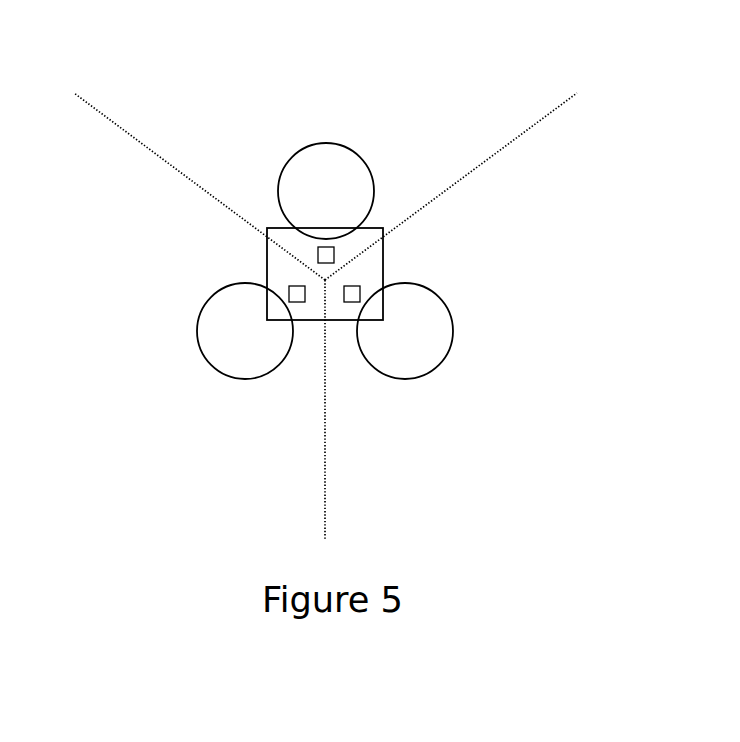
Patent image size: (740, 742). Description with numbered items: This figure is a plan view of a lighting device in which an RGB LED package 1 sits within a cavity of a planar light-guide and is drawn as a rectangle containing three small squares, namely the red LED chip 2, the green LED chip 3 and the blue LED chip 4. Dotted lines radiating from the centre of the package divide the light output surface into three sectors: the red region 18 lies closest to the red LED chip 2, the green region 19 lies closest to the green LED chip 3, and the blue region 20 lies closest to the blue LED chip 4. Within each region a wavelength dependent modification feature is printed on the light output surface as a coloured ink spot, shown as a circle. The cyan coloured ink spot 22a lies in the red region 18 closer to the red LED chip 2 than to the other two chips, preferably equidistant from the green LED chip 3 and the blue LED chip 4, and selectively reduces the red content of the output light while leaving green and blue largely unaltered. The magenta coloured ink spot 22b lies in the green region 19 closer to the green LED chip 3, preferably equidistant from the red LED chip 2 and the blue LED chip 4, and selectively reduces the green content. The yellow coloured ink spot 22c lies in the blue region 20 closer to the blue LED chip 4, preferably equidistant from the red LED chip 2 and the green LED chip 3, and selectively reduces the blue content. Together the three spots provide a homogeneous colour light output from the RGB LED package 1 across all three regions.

The RGB LED package 1 is at (385, 261).
The red LED chip 2 is at (288, 288).
The green LED chip 3 is at (336, 250).
The blue LED chip 4 is at (361, 287).
The red region 18 is at (189, 419).
The green region 19 is at (206, 79).
The blue region 20 is at (456, 459).
The cyan coloured ink spot 22a is at (201, 343).
The magenta coloured ink spot 22b is at (318, 158).
The yellow coloured ink spot 22c is at (443, 345).